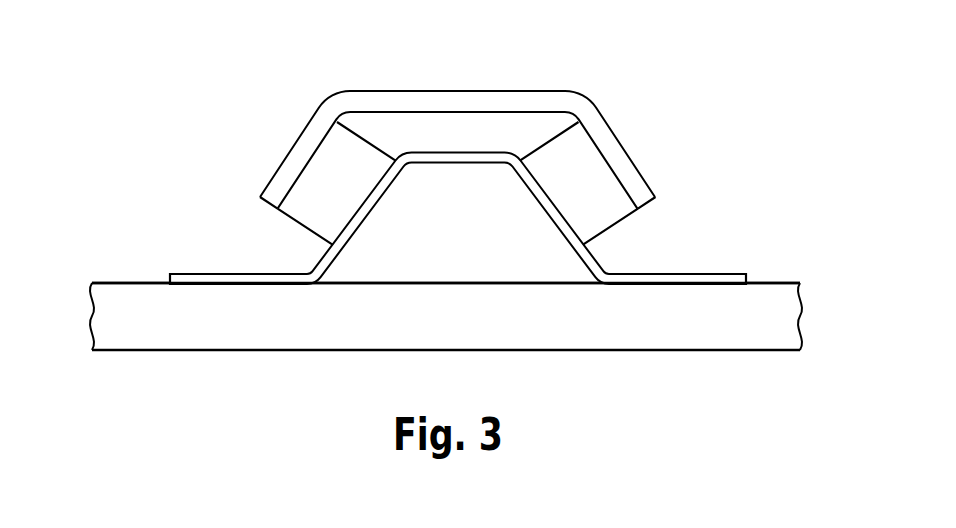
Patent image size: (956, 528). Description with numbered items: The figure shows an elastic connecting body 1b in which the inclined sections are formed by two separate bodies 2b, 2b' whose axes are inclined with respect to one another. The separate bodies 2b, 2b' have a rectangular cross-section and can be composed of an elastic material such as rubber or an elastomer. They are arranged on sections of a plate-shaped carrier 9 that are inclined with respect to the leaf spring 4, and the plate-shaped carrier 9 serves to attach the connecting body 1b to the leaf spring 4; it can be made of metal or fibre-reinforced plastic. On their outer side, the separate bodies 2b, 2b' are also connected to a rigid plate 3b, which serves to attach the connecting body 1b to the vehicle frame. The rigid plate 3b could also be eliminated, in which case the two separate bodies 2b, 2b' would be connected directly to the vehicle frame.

The connecting body 1b is at (461, 149).
The rigid plate 3b is at (432, 100).
The separate body 2b is at (312, 188).
The separate body 2b' is at (606, 190).
The plate-shaped carrier 9 is at (377, 195).
The leaf spring 4 is at (103, 307).